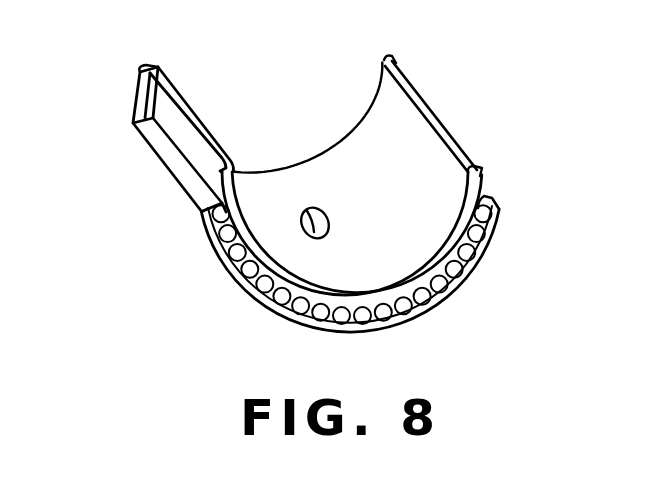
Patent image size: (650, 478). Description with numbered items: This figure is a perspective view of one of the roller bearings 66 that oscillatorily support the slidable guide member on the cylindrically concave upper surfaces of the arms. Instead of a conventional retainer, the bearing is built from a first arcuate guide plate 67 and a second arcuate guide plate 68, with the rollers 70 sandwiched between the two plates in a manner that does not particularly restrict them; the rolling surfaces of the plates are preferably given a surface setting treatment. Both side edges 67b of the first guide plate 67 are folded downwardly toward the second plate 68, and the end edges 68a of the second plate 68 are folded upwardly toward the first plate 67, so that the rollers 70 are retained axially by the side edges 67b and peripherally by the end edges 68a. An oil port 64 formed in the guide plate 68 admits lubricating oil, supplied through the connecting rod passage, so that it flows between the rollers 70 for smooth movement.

The roller bearing 66 is at (208, 98).
The first arcuate guide plate 67 is at (378, 121).
The side edges of the first guide plate 67b is at (153, 92).
The oil port 64 is at (312, 215).
The second arcuate guide plate 68 is at (423, 308).
The end edges of the second guide plate 68a is at (486, 198).
The rollers 70 is at (305, 305).